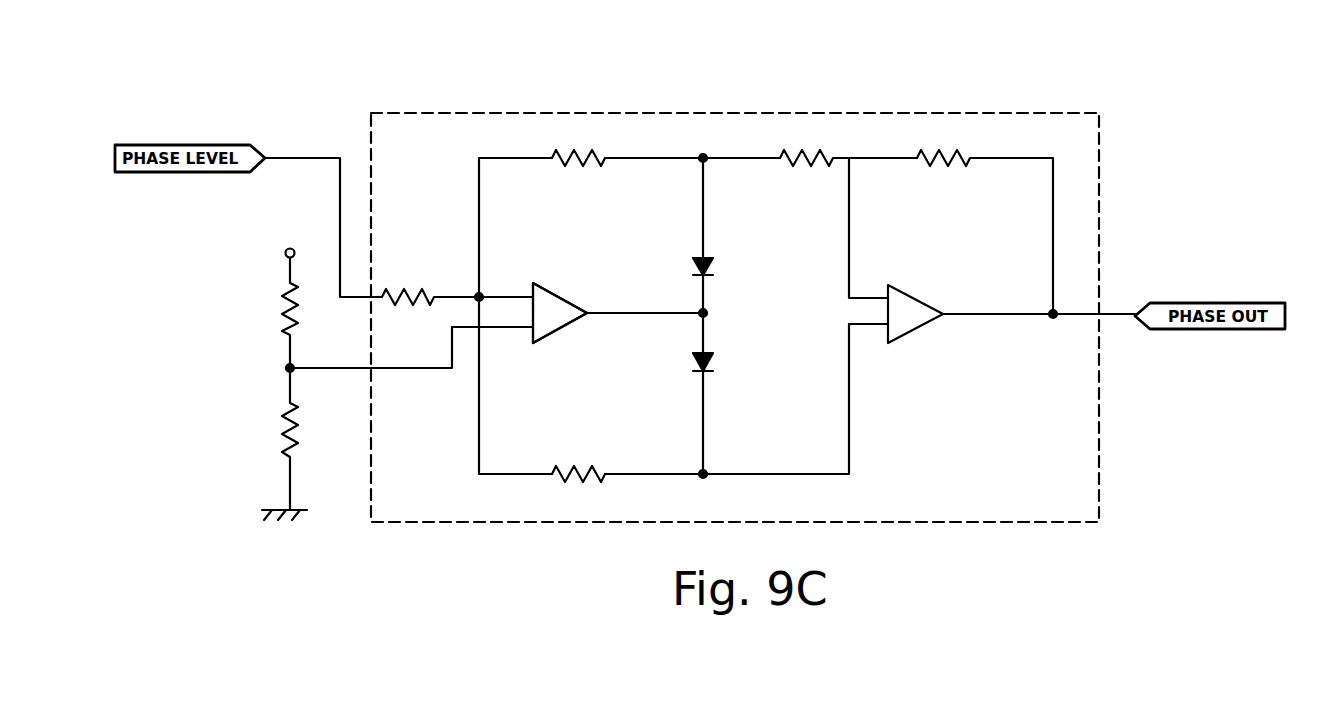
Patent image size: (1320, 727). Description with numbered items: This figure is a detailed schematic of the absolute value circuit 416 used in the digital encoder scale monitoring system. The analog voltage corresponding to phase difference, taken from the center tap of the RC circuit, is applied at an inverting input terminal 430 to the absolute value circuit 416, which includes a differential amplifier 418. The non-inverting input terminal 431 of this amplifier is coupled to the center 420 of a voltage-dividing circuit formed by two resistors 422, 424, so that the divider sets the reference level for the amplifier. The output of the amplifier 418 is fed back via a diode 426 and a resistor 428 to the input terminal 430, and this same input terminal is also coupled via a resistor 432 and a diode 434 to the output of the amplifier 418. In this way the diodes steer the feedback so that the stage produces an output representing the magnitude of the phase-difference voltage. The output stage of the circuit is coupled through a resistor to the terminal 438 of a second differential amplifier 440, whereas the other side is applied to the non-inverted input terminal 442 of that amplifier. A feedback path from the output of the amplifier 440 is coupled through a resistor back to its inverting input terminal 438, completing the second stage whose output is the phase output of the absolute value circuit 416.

The absolute value circuit 416 is at (888, 113).
The differential amplifier 418 is at (572, 302).
The center of voltage-dividing circuit 420 is at (288, 367).
The voltage-dividing circuit resistor 422 is at (290, 300).
The voltage-dividing circuit resistor 424 is at (293, 452).
The diode 426 is at (706, 354).
The resistor 428 is at (582, 466).
The inverting input terminal 430 is at (533, 296).
The non-inverting input terminal 431 is at (533, 336).
The resistor 432 is at (580, 150).
The diode 434 is at (708, 258).
The inverting input terminal 438 is at (872, 298).
The differential amplifier 440 is at (920, 302).
The non-inverted input terminal 442 is at (856, 326).